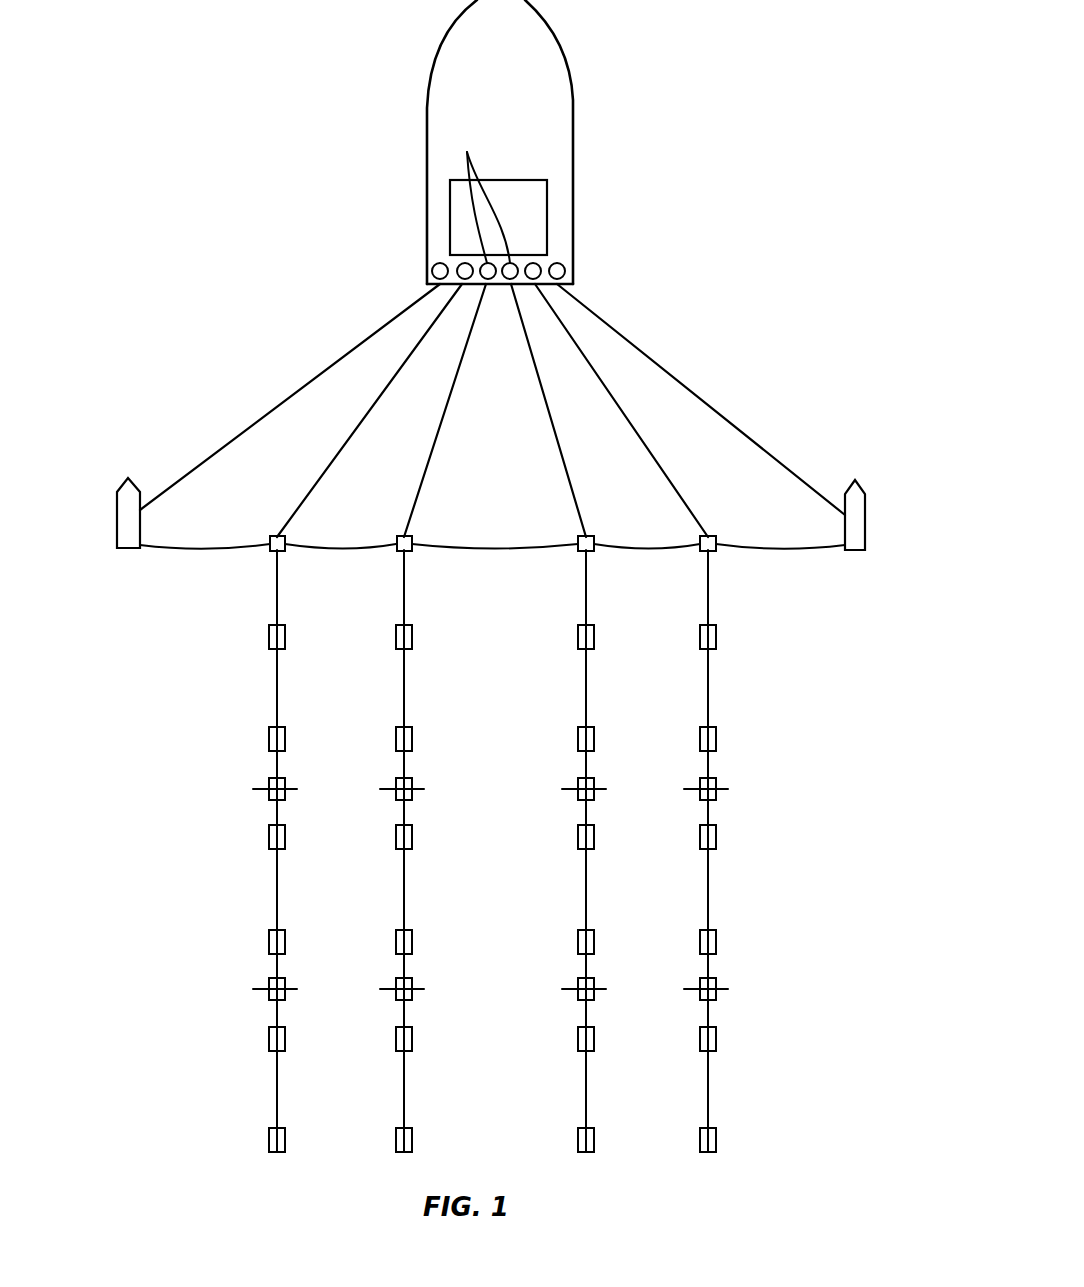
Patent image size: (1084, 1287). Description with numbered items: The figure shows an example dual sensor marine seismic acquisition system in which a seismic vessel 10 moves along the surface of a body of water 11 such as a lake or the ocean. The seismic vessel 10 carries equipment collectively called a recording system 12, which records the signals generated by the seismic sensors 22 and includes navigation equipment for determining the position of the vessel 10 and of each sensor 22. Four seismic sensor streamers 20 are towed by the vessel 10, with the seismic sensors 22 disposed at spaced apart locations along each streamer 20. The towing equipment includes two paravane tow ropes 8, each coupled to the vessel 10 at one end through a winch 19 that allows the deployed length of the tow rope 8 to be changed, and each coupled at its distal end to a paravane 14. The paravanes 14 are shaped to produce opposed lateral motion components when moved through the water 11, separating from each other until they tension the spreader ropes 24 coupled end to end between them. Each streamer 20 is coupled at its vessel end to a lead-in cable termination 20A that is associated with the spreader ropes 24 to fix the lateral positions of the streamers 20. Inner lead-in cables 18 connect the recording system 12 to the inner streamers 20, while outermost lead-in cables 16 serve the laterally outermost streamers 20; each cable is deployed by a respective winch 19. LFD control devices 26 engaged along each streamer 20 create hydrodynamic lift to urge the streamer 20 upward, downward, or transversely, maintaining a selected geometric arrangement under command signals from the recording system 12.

The paravane tow rope 8 is at (348, 356).
The seismic vessel 10 is at (563, 52).
The body of water 11 is at (860, 227).
The recording system 12 is at (537, 215).
The paravane 14 is at (117, 512).
The outermost lead-in cable 16 is at (352, 433).
The inner lead-in cable 18 is at (432, 441).
The winch 19 is at (600, 255).
The seismic sensor streamer 20 is at (274, 595).
The lead-in cable termination 20A is at (270, 537).
The seismic sensor 22 is at (268, 637).
The spreader rope 24 is at (178, 548).
The LFD control device 26 is at (268, 786).